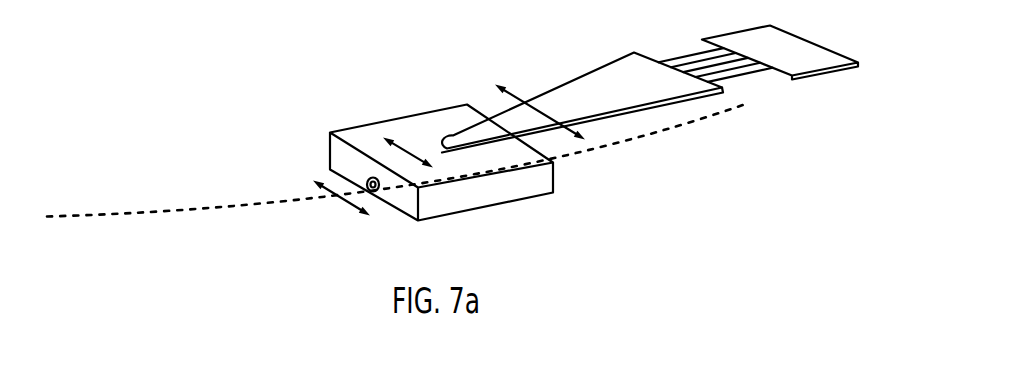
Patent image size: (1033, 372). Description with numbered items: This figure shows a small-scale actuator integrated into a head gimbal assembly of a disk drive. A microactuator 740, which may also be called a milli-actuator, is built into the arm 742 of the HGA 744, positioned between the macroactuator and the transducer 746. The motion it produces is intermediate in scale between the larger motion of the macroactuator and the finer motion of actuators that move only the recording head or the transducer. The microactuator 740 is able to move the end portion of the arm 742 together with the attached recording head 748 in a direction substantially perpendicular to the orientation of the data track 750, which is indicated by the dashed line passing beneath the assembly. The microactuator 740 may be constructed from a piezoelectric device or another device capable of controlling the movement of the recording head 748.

The microactuator 740 is at (753, 67).
The arm 742 is at (573, 92).
The HGA 744 is at (608, 167).
The transducer 746 is at (377, 190).
The recording head 748 is at (418, 125).
The data track 750 is at (168, 212).